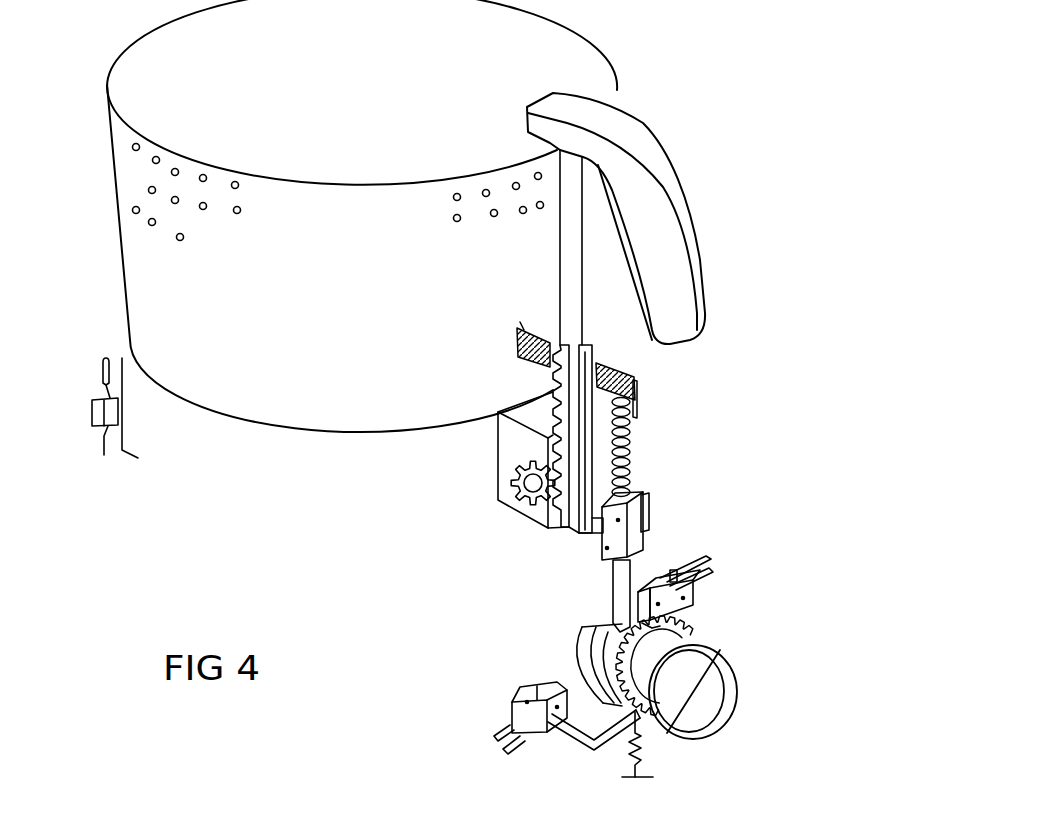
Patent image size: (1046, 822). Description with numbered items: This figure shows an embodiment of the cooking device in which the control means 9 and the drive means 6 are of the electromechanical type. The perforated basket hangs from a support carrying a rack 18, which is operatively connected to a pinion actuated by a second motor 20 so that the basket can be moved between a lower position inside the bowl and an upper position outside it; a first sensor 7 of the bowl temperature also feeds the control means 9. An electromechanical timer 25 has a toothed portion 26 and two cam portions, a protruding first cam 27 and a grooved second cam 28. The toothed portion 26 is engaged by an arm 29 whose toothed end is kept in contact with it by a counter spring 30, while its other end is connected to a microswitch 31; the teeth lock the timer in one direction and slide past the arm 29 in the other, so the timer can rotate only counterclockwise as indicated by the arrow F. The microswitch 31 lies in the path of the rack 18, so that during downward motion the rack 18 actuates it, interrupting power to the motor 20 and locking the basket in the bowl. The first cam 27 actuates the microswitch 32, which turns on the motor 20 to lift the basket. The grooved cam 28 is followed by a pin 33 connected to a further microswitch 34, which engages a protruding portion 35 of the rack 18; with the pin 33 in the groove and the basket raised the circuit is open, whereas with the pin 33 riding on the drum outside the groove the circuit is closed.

The drive means 6 is at (775, 268).
The first sensor 7 is at (100, 420).
The rack 18 is at (553, 390).
The second motor 20 is at (507, 445).
The electromechanical timer 25 is at (727, 707).
The toothed portion 26 is at (683, 638).
The first cam 27 is at (652, 628).
The second cam 28 is at (620, 628).
The arm 29 is at (592, 742).
The counter spring 30 is at (640, 753).
The microswitch 31 is at (510, 714).
The microswitch 32 is at (693, 605).
The pin 33 is at (613, 573).
The further microswitch 34 is at (623, 532).
The protruding portion 35 is at (590, 528).
The control means 9 is at (770, 679).
The arrow F is at (571, 668).